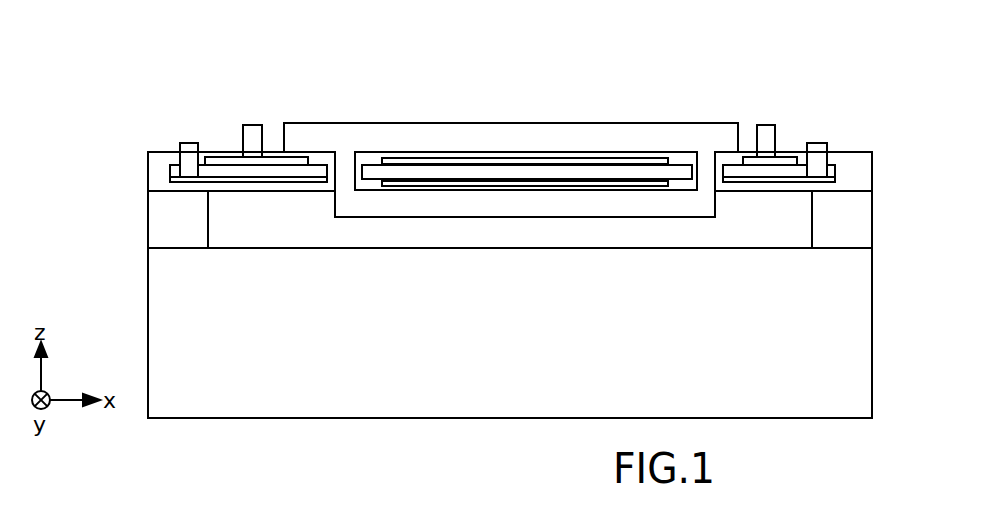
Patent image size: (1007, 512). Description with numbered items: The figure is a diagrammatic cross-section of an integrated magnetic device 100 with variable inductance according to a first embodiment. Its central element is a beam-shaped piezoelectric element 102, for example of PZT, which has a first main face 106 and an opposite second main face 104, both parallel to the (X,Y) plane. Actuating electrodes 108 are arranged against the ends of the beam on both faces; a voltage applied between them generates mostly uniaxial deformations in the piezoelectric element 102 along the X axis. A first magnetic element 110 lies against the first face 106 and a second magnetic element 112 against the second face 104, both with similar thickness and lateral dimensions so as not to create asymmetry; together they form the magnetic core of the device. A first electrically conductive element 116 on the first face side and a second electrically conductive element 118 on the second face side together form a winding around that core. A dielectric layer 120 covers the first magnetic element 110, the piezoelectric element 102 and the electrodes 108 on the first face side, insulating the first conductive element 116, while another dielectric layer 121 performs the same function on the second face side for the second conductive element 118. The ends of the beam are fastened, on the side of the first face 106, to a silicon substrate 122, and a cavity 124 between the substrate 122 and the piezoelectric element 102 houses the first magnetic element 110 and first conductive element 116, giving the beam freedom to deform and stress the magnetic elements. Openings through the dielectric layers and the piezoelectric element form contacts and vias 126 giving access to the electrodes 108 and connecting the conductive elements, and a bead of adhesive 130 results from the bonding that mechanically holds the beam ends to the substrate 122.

The integrated magnetic device 100 is at (805, 62).
The piezoelectric element 102 is at (692, 176).
The second main face 104 is at (684, 146).
The first main face 106 is at (366, 187).
The actuating electrodes 108 is at (194, 178).
The first magnetic element 110 is at (480, 182).
The second magnetic element 112 is at (537, 157).
The first electrically conductive element 116 is at (540, 203).
The second electrically conductive element 118 is at (462, 128).
The dielectric layer 120 is at (690, 195).
The dielectric layer 121 is at (372, 160).
The substrate 122 is at (860, 293).
The cavity 124 is at (641, 244).
The vias 126 is at (345, 160).
The bead of adhesive 130 is at (153, 225).